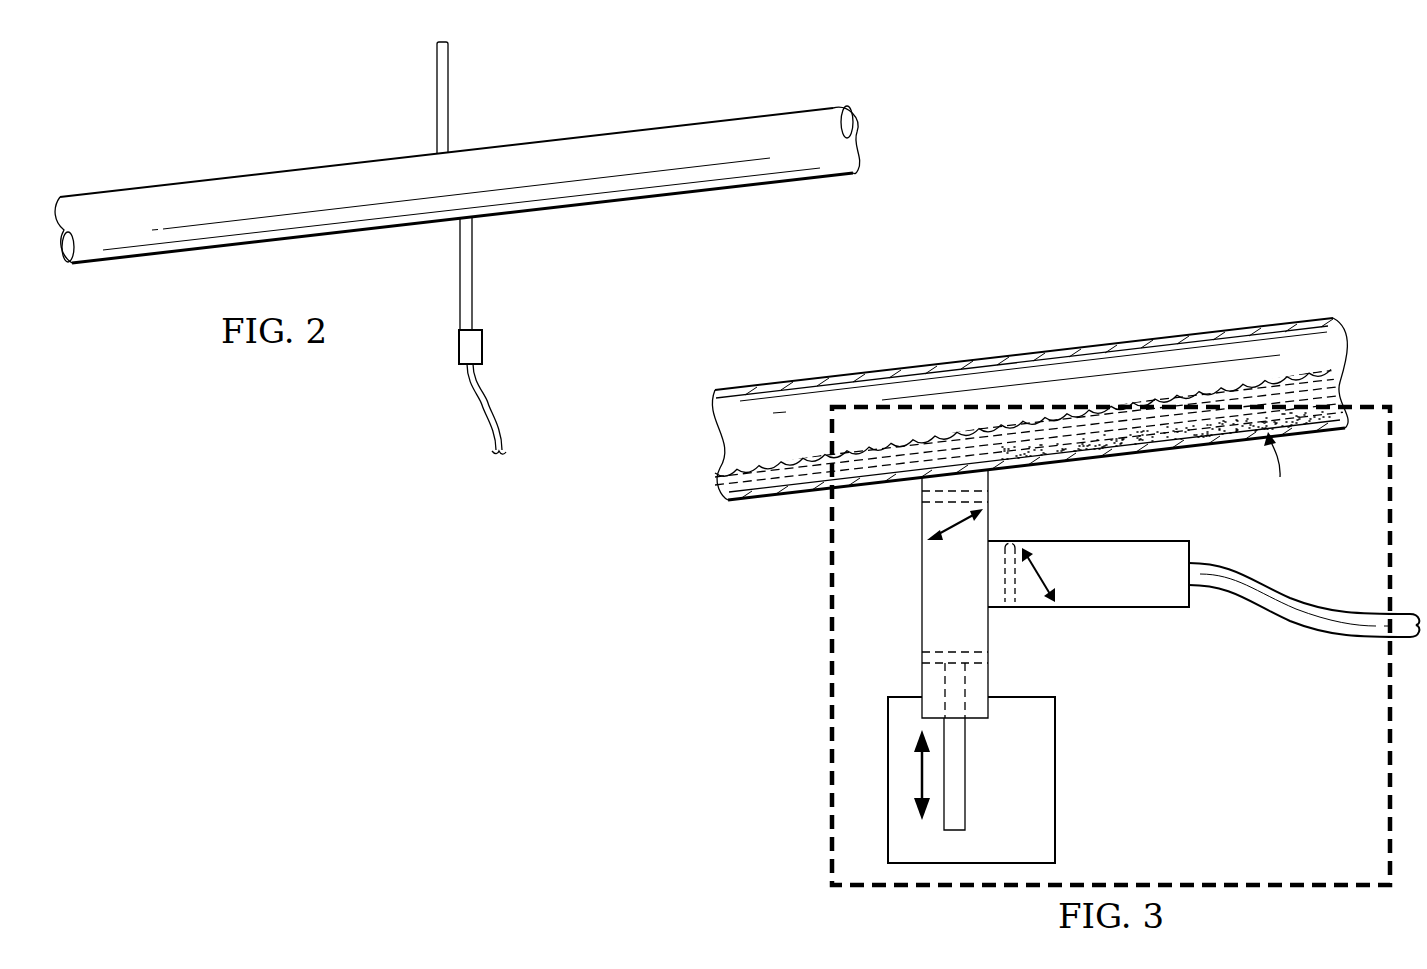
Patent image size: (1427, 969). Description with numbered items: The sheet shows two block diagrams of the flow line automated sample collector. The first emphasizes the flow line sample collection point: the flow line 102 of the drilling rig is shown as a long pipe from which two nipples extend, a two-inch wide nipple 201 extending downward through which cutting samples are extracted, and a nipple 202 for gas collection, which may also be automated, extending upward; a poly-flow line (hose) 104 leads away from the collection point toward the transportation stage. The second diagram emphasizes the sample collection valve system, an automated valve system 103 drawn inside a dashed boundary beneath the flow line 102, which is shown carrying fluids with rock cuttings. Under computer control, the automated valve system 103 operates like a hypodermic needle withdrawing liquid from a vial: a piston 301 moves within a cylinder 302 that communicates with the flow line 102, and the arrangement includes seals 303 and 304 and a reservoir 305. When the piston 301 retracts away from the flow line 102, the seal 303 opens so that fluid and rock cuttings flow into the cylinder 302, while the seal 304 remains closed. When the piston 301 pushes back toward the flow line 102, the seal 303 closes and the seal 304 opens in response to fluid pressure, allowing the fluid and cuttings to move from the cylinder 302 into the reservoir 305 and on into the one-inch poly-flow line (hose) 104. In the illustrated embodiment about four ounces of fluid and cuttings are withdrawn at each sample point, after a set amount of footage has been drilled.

In FIG. 2, the flow line 102 is at (268, 173).
In FIG. 3, the automated valve system 103 is at (822, 703).
In FIG. 2, the poly-flow line (hose) 104 is at (473, 397).
In FIG. 3, the poly-flow line (hose) 104 is at (1338, 608).
In FIG. 2, the nipple 201 is at (472, 275).
In FIG. 2, the nipple for gas collection 202 is at (435, 100).
In FIG. 3, the piston 301 is at (965, 773).
In FIG. 3, the cylinder 302 is at (922, 618).
In FIG. 3, the seal 303 is at (943, 503).
In FIG. 3, the seal 304 is at (1017, 597).
In FIG. 3, the reservoir 305 is at (1088, 537).